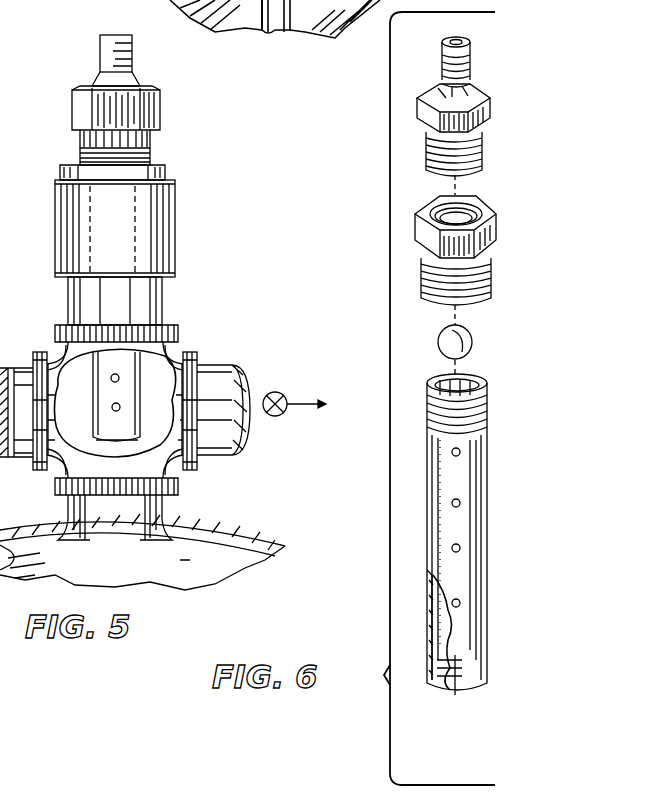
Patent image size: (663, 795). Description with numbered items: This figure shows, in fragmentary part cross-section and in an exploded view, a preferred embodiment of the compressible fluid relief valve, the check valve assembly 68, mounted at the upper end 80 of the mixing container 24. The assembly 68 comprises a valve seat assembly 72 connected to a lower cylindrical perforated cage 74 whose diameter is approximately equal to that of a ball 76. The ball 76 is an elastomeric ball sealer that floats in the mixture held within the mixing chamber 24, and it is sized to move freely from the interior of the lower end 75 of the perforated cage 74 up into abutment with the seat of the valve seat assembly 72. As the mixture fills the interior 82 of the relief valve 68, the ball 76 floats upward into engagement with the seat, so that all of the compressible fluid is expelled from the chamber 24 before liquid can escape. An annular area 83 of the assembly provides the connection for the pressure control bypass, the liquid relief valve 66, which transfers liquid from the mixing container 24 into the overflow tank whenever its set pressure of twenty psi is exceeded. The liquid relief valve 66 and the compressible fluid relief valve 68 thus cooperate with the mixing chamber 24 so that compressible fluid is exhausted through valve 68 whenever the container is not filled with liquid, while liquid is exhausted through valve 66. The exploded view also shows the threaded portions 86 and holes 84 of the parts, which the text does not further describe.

In FIG. 5, the mixing container 24 is at (213, 520).
In FIG. 5, the pressure control bypass 66 is at (282, 392).
In FIG. 5, the check valve assembly 68 is at (190, 232).
In FIG. 6, the check valve assembly 68 is at (466, 708).
In FIG. 5, the valve seat assembly 72 is at (160, 115).
In FIG. 6, the valve seat assembly 72 is at (488, 100).
In FIG. 5, the lower cylindrical perforated cage 74 is at (93, 362).
In FIG. 6, the lower cylindrical perforated cage 74 is at (491, 534).
In FIG. 6, the lower end of the perforated cage 75 is at (487, 408).
In FIG. 6, the ball 76 is at (472, 344).
In FIG. 5, the upper end of the chamber 80 is at (132, 55).
In FIG. 6, the upper end of the chamber 80 is at (470, 50).
In FIG. 6, the interior of the relief valve 82 is at (492, 300).
In FIG. 5, the annular area 83 is at (160, 380).
In FIG. 5, the holes 84 is at (112, 407).
In FIG. 6, the holes 84 is at (460, 548).
In FIG. 6, the threaded portion 86 is at (482, 155).